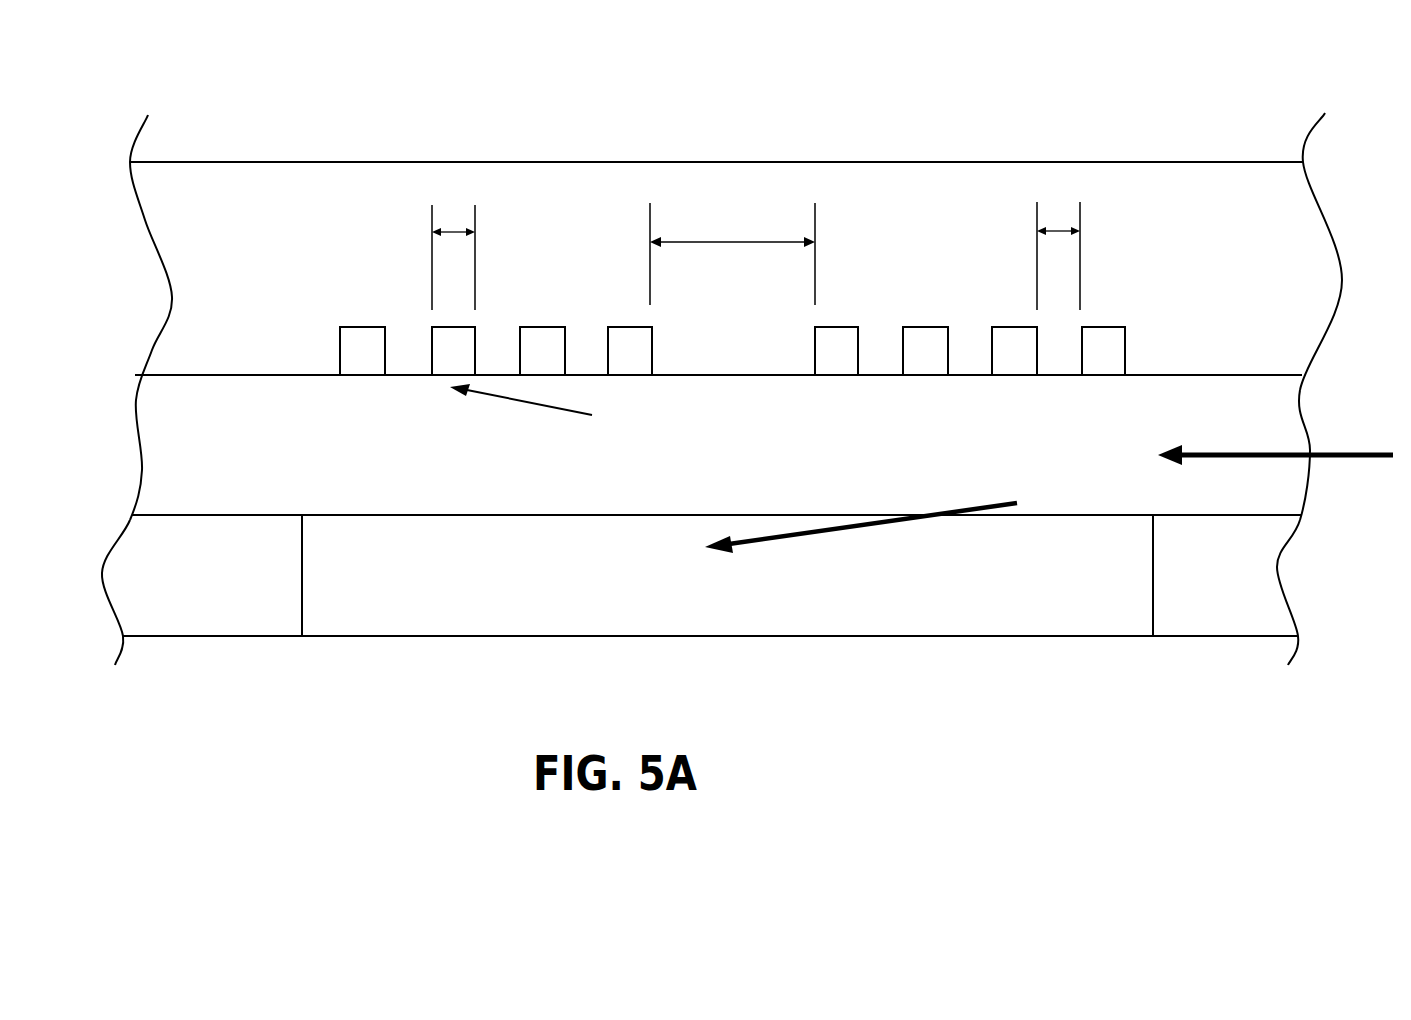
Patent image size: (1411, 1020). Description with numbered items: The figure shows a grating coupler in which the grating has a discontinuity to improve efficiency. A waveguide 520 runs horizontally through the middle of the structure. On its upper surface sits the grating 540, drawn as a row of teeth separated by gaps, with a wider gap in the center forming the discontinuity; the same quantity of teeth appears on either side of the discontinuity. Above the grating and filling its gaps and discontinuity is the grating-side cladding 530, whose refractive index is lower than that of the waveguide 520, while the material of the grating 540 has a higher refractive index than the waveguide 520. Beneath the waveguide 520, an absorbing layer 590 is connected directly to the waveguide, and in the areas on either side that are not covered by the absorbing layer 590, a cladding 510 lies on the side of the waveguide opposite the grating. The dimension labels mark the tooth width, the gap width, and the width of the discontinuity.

The cladding 510 is at (205, 615).
The waveguide 520 is at (170, 443).
The grating-side cladding 530 is at (918, 177).
The grating 540 is at (357, 327).
The absorbing layer 590 is at (482, 615).